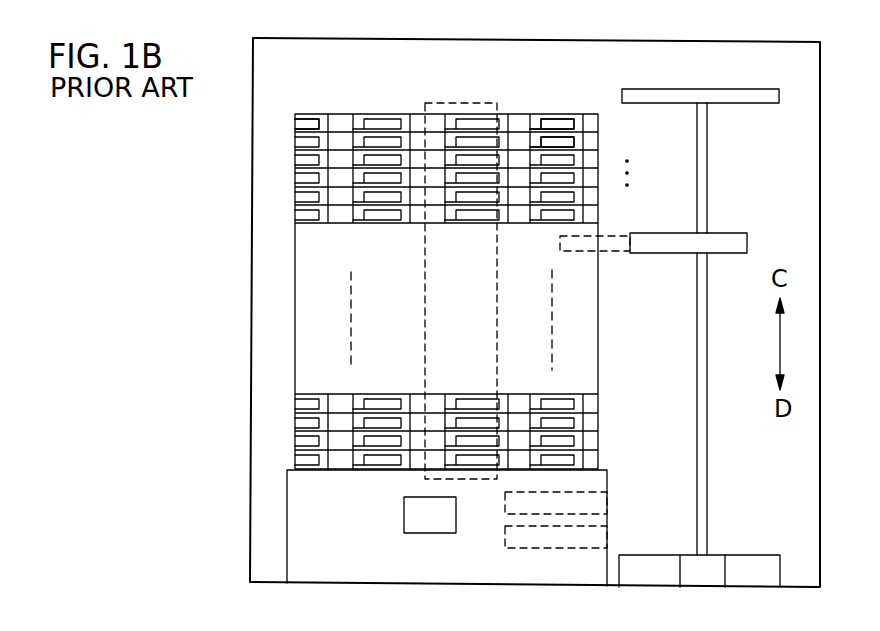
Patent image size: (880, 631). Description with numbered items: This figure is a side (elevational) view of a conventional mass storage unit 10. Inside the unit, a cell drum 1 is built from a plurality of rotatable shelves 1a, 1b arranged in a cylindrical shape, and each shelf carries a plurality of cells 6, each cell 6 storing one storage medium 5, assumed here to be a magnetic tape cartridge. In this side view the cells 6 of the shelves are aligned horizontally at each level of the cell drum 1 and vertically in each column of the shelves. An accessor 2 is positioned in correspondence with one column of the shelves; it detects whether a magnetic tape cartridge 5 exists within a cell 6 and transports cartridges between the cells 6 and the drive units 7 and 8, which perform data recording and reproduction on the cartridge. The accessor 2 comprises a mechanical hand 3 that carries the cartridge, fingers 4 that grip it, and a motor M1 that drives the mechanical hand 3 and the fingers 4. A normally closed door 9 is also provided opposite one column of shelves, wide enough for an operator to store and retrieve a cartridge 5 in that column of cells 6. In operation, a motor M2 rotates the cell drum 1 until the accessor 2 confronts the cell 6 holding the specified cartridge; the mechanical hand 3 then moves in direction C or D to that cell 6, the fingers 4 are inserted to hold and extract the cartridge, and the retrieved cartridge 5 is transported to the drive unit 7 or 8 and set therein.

The mass storage unit 10 is at (743, 42).
The cell 6 is at (590, 122).
The cell drum 1 is at (518, 114).
The rotatable shelf 1a is at (599, 127).
The rotatable shelf 1b is at (599, 146).
The storage medium 5 is at (312, 113).
The door 9 is at (497, 300).
The fingers 4 is at (607, 236).
The accessor 2 is at (779, 90).
The mechanical hand 3 is at (747, 240).
The drive unit 7 is at (596, 492).
The drive unit 8 is at (600, 526).
The motor M2 is at (433, 525).
The motor M1 is at (720, 555).